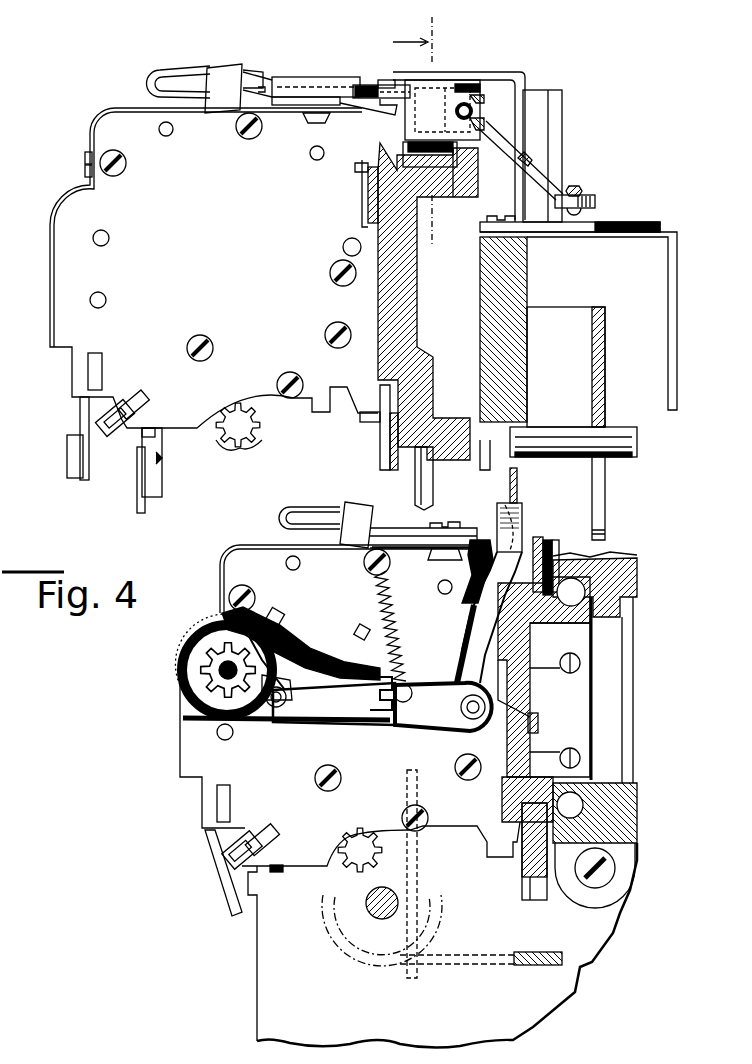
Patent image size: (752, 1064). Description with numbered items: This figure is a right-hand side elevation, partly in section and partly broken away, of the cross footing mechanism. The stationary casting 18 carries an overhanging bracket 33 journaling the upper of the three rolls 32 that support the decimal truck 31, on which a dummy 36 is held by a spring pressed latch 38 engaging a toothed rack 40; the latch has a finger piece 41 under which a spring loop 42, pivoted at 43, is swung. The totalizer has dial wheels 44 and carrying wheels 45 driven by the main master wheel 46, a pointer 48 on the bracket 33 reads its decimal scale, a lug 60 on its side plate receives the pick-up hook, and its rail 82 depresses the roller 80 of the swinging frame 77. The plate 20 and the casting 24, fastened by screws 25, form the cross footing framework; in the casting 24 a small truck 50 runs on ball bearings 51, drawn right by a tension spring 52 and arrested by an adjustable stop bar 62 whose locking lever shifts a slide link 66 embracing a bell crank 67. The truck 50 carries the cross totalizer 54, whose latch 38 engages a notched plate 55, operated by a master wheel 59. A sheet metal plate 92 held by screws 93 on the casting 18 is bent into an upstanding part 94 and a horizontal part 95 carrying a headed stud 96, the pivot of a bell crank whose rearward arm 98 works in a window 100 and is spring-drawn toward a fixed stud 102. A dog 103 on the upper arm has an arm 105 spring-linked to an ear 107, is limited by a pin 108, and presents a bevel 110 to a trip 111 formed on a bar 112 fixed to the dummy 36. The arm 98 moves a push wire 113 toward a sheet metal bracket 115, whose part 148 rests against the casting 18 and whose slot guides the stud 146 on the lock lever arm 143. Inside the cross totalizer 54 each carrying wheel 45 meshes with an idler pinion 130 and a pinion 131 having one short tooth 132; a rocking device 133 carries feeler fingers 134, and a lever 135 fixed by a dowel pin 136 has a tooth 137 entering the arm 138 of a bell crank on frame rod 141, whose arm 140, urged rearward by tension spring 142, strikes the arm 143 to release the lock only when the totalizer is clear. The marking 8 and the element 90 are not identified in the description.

The section line 8- 8 is at (419, 131).
The casting 18 is at (527, 266).
The plate 20 is at (256, 947).
The casting 24 is at (625, 558).
The screws 25 is at (616, 866).
The decimal carriage or truck 31 is at (405, 292).
The rolls or wheels 32 is at (452, 197).
The overhanging bracket 33 is at (540, 91).
The dummy 36 is at (54, 246).
The spring pressed latch 38 is at (222, 111).
The toothed rack 40 is at (368, 204).
The finger piece 41 is at (192, 72).
The spring loop 42 is at (160, 72).
The pivot screw 43 is at (445, 523).
The dial wheels 44 is at (195, 645).
The carrying wheels 45 is at (240, 403).
The main master wheel 46 is at (226, 447).
The pointer 48 is at (400, 82).
The truck 50 is at (530, 632).
The ball bearings 51 is at (572, 607).
The tension spring 52 is at (570, 674).
The totalizer 54 is at (225, 549).
The plate 55 is at (505, 648).
The master wheel 59 is at (370, 860).
The lug 60 is at (375, 423).
The adjustable stop bar 62 is at (546, 718).
The slide link 66 is at (537, 951).
The bell crank 67 is at (413, 966).
The swinging frame 77 is at (138, 499).
The roller 80 is at (160, 466).
The track or rail 82 is at (153, 436).
The bracket 90 is at (84, 480).
The sheet metal plate 92 is at (636, 222).
The screws 93 is at (499, 220).
The upstanding part 94 is at (518, 116).
The forwardly extending horizontal part 95 is at (490, 76).
The headed stud 96 is at (441, 123).
The lower rearward extending arm 98 is at (592, 196).
The opening or window 100 is at (518, 147).
The fixed stud 102 is at (480, 127).
The dog 103 is at (377, 82).
The arm 105 is at (474, 107).
The ear 107 is at (480, 121).
The pin 108 is at (463, 84).
The bevel 110 is at (374, 106).
The trip 111 is at (325, 78).
The bar 112 is at (290, 108).
The push wire 113 is at (574, 190).
The sheet metal bracket 115 is at (605, 371).
The idler pinion 130 is at (215, 711).
The pinion 131 is at (182, 688).
The short tooth 132 is at (230, 648).
The arbor or rocking device 133 is at (283, 720).
The feeler fingers 134 is at (258, 612).
The lever 135 is at (325, 720).
The dowel pin 136 is at (262, 712).
The tooth 137 is at (375, 705).
The arm 138 is at (418, 718).
The arm 140 is at (490, 533).
The frame rod 141 is at (462, 722).
The tension spring 142 is at (395, 648).
The third arm 143 is at (517, 484).
The post or stud 146 is at (558, 427).
The part 148 is at (570, 308).